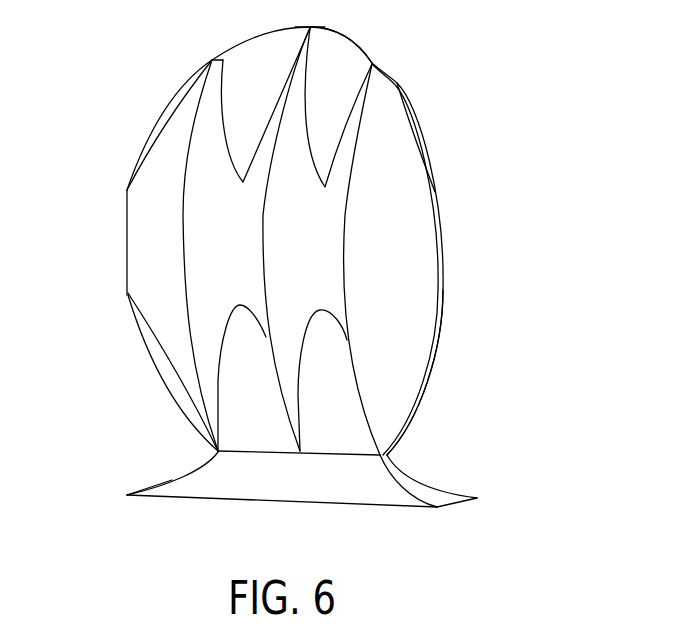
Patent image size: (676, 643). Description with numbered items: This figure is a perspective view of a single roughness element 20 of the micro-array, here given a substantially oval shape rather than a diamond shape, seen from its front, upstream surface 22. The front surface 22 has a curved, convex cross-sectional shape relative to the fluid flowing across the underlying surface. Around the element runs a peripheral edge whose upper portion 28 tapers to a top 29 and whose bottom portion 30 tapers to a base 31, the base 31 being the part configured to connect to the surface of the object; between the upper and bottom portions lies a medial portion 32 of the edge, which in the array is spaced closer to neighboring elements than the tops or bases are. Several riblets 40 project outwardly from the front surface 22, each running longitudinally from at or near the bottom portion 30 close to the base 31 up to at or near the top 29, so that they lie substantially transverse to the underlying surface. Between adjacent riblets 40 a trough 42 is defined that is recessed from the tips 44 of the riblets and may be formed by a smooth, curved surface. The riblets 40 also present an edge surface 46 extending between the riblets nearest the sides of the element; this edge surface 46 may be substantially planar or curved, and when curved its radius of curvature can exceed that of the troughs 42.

The roughness element 20 is at (478, 105).
The front, upstream surface 22 is at (407, 182).
The upper portion 28 is at (347, 58).
The top 29 is at (292, 28).
The bottom portion 30 is at (405, 381).
The base 31 is at (397, 469).
The medial portion 32 is at (121, 240).
The riblet 40 is at (171, 291).
The trough 42 is at (322, 135).
The tip 44 is at (280, 246).
The edge surface 46 is at (142, 252).